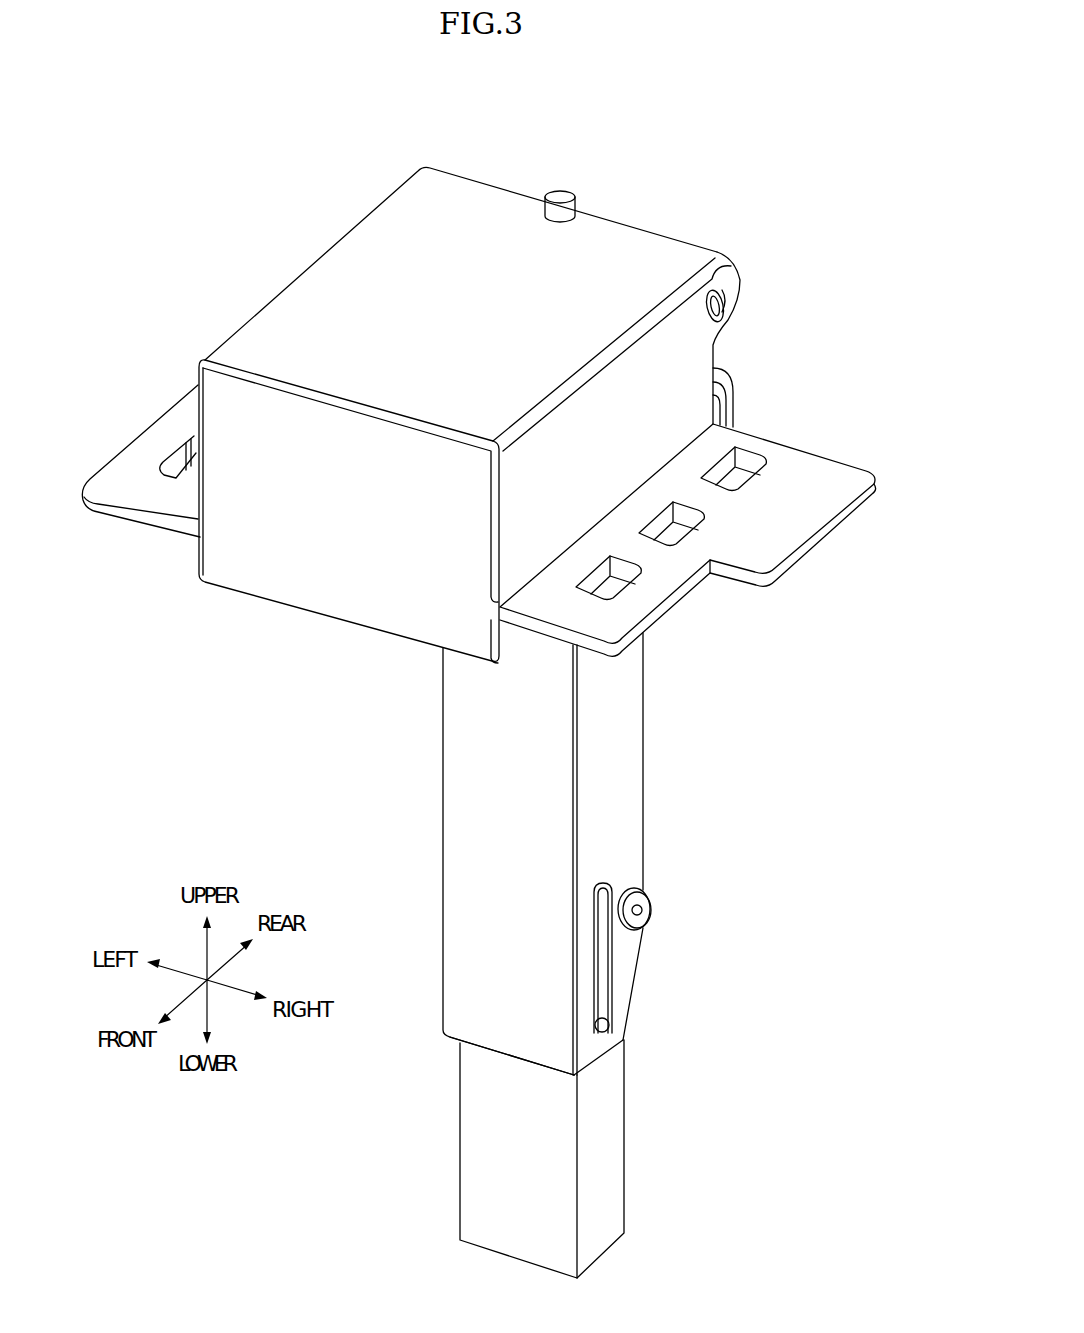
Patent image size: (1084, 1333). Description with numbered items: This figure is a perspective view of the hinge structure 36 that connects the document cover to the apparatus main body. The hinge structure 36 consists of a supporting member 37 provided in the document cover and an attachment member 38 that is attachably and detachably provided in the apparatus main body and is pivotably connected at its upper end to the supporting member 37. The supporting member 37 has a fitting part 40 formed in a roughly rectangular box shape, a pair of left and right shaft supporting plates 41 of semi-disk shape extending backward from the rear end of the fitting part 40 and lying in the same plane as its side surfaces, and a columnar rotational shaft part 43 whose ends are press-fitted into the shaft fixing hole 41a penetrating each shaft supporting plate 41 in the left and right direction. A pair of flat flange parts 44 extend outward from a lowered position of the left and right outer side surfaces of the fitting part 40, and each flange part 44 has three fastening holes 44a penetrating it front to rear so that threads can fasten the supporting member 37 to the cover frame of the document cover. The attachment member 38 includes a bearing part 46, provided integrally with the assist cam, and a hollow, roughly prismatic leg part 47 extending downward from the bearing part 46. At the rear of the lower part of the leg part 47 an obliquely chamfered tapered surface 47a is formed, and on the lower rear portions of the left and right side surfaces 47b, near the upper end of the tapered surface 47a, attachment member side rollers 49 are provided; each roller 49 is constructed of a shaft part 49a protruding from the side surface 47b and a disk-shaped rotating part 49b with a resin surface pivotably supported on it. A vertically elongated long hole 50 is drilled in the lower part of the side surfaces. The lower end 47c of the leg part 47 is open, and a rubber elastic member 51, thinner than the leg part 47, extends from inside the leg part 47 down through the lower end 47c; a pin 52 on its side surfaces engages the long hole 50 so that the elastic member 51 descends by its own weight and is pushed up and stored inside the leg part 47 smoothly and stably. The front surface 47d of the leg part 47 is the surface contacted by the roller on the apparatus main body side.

The hinge structure 36 is at (642, 142).
The supporting member 37 is at (798, 268).
The attachment member 38 is at (755, 868).
The fitting part 40 is at (337, 250).
The shaft supporting plate 41 is at (724, 272).
The shaft fixing hole 41a is at (723, 298).
The rotational shaft part 43 is at (738, 312).
The flange part 44 is at (800, 540).
The fastening hole 44a is at (623, 556).
The bearing part 46 is at (735, 404).
The leg part 47 is at (652, 818).
The tapered surface 47a is at (640, 958).
The side surface 47b is at (627, 738).
The lower end 47c is at (500, 1055).
The front surface 47d is at (483, 797).
The attachment member side roller 49 is at (813, 883).
The shaft part 49a is at (643, 910).
The rotating part 49b is at (645, 916).
The long hole 50 is at (600, 972).
The elastic member 51 is at (627, 1183).
The pin 52 is at (607, 1032).